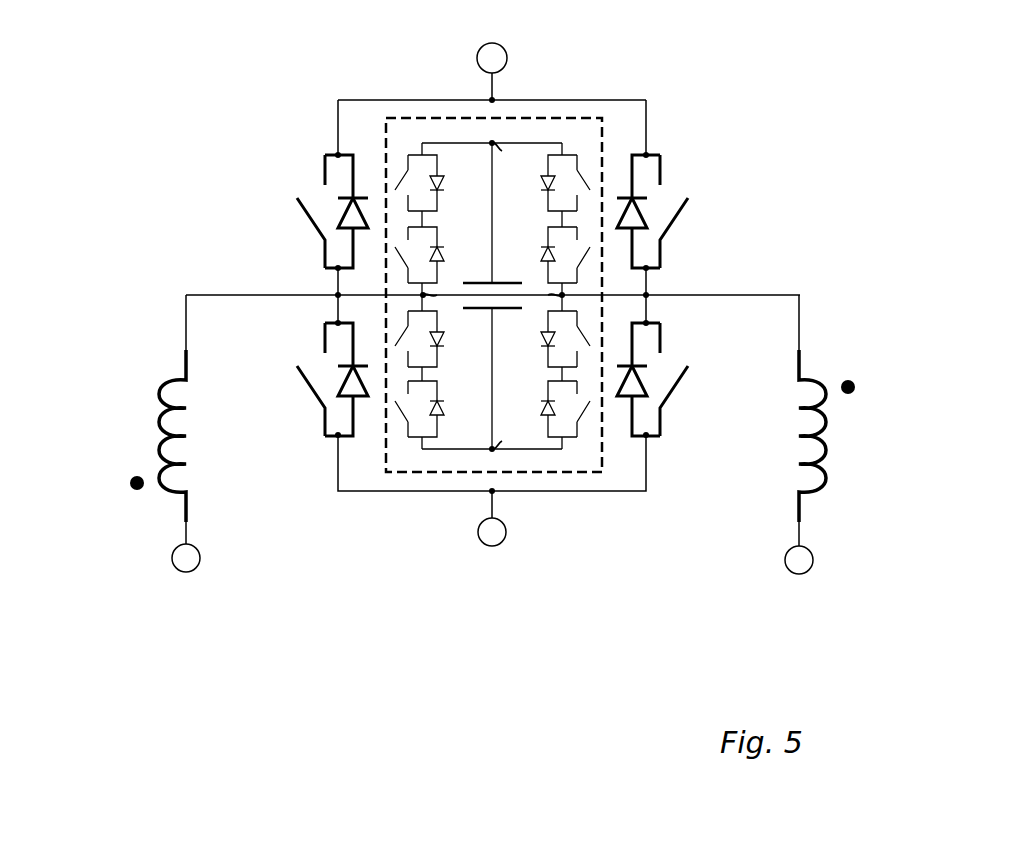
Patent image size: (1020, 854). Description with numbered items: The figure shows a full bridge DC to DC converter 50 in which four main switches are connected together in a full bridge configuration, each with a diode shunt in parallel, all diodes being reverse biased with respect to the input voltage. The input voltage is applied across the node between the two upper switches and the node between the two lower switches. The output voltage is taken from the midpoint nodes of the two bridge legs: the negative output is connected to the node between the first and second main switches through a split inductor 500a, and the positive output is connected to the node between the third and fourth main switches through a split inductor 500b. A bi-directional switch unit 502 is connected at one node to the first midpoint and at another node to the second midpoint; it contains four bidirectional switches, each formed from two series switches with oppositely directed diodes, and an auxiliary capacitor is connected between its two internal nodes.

The full bridge DC to DC converter 50 is at (364, 598).
The bi-directional switch unit 502 is at (408, 117).
The split inductor 500a is at (164, 383).
The split inductor 500b is at (820, 383).